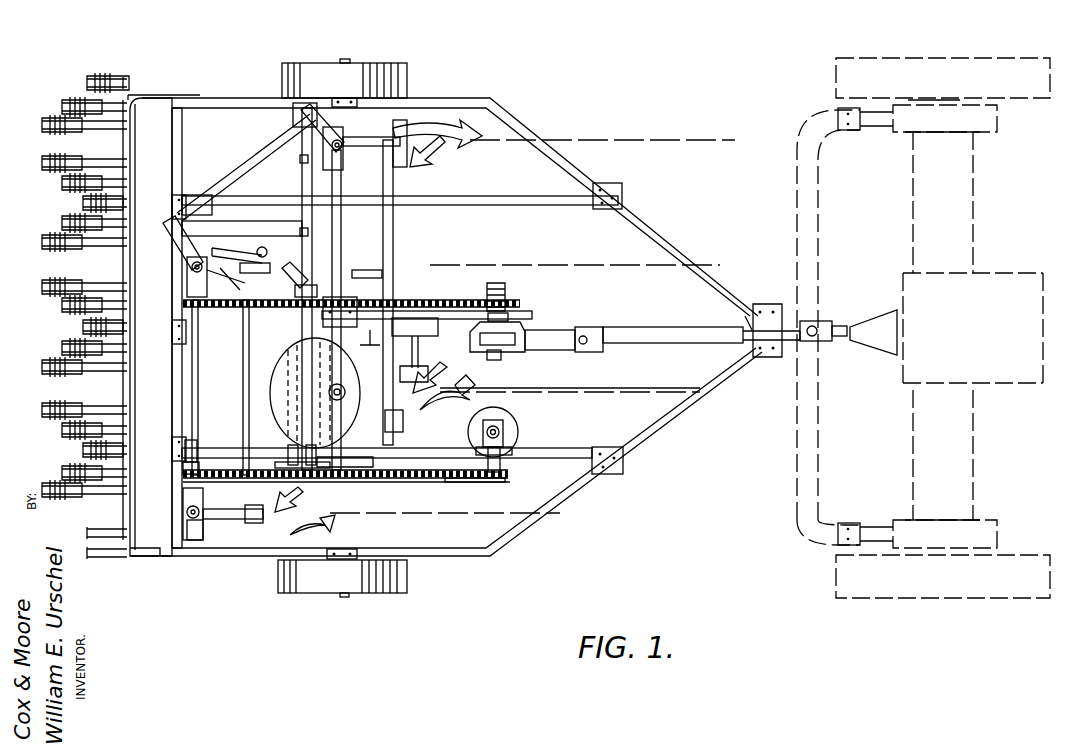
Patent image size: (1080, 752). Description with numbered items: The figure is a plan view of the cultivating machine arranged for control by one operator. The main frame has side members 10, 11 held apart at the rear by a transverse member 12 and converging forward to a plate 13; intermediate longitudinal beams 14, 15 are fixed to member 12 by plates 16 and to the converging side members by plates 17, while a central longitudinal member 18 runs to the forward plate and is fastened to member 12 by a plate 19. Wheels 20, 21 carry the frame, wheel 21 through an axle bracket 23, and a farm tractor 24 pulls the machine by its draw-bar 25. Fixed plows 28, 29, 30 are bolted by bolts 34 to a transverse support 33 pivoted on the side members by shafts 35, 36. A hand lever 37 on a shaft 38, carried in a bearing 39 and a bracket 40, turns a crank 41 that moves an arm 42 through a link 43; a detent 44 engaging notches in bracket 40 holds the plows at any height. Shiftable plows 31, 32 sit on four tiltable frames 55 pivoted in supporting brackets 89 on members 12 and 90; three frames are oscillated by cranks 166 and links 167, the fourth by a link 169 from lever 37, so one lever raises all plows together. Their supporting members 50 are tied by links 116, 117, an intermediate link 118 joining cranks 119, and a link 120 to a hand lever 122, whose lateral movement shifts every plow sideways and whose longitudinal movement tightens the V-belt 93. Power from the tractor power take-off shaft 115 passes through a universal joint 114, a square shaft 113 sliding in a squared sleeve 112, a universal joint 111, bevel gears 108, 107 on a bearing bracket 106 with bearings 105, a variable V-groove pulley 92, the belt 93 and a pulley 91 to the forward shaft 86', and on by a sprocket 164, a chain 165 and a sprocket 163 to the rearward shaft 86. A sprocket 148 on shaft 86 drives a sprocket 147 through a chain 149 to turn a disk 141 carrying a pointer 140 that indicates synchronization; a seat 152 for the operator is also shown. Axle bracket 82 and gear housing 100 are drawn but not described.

The side member 10 is at (458, 558).
The side member 11 is at (452, 107).
The transverse member 12 is at (172, 372).
The plate 13 is at (765, 357).
The intermediate longitudinal beam 14 is at (578, 448).
The intermediate longitudinal beam 15 is at (510, 196).
The plate 16 is at (172, 203).
The plate 17 is at (608, 195).
The third longitudinal member 18 is at (648, 327).
The plate 19 is at (172, 332).
The wheel 20 is at (378, 585).
The wheel 21 is at (390, 70).
The axle bracket 23 is at (345, 59).
The farm tractor 24 is at (1006, 268).
The draw-bar 25 is at (805, 532).
The plow 28 is at (45, 125).
The plow 29 is at (62, 105).
The plow 30 is at (90, 80).
The shiftable plow 31 is at (478, 134).
The shiftable plow 32 is at (440, 158).
The transverse support 33 is at (160, 98).
The bolt 34 is at (118, 125).
The shaft 35 is at (195, 556).
The shaft 36 is at (200, 97).
The hand lever 37 is at (375, 462).
The shaft 38 is at (293, 118).
The bearing 39 is at (300, 112).
The bracket 40 is at (306, 455).
The crank 41 is at (370, 215).
The arm 42 is at (182, 208).
The link 43 is at (205, 228).
The detent 44 is at (365, 482).
The plow supporting member 50 is at (294, 309).
The tiltable frame 55 is at (345, 150).
The wheel axle bracket 82 is at (343, 597).
The shaft 86 is at (209, 387).
The shaft 86' is at (392, 270).
The supporting bracket 89 is at (183, 520).
The transverse frame member 90 is at (341, 190).
The V-groove pulley 91 is at (360, 310).
The V-groove pulley 92 is at (510, 315).
The V-belt 93 is at (450, 311).
The gear housing 100 is at (493, 407).
The bearing 105 is at (505, 295).
The bearing bracket 106 is at (548, 350).
The bevel gear 107 is at (505, 352).
The bevel gear 108 is at (522, 328).
The universal joint 111 is at (600, 327).
The squared sleeve 112 is at (698, 330).
The square shaft 113 is at (758, 312).
The universal joint 114 is at (825, 320).
The power take-off shaft 115 is at (860, 345).
The link 116 is at (393, 245).
The link 117 is at (249, 350).
The intermediate link 118 is at (235, 176).
The crank 119 is at (336, 124).
The link 120 is at (570, 385).
The hand lever 122 is at (420, 350).
The pointer 140 is at (513, 430).
The power driven disk 141 is at (503, 432).
The sprocket 147 is at (505, 478).
The sprocket 148 is at (198, 470).
The chain 149 is at (455, 482).
The seat 152 is at (290, 380).
The sprocket 163 is at (318, 290).
The sprocket 164 is at (183, 302).
The chain 165 is at (266, 292).
The crank 166 is at (300, 160).
The link 167 is at (238, 251).
The link 169 is at (233, 504).